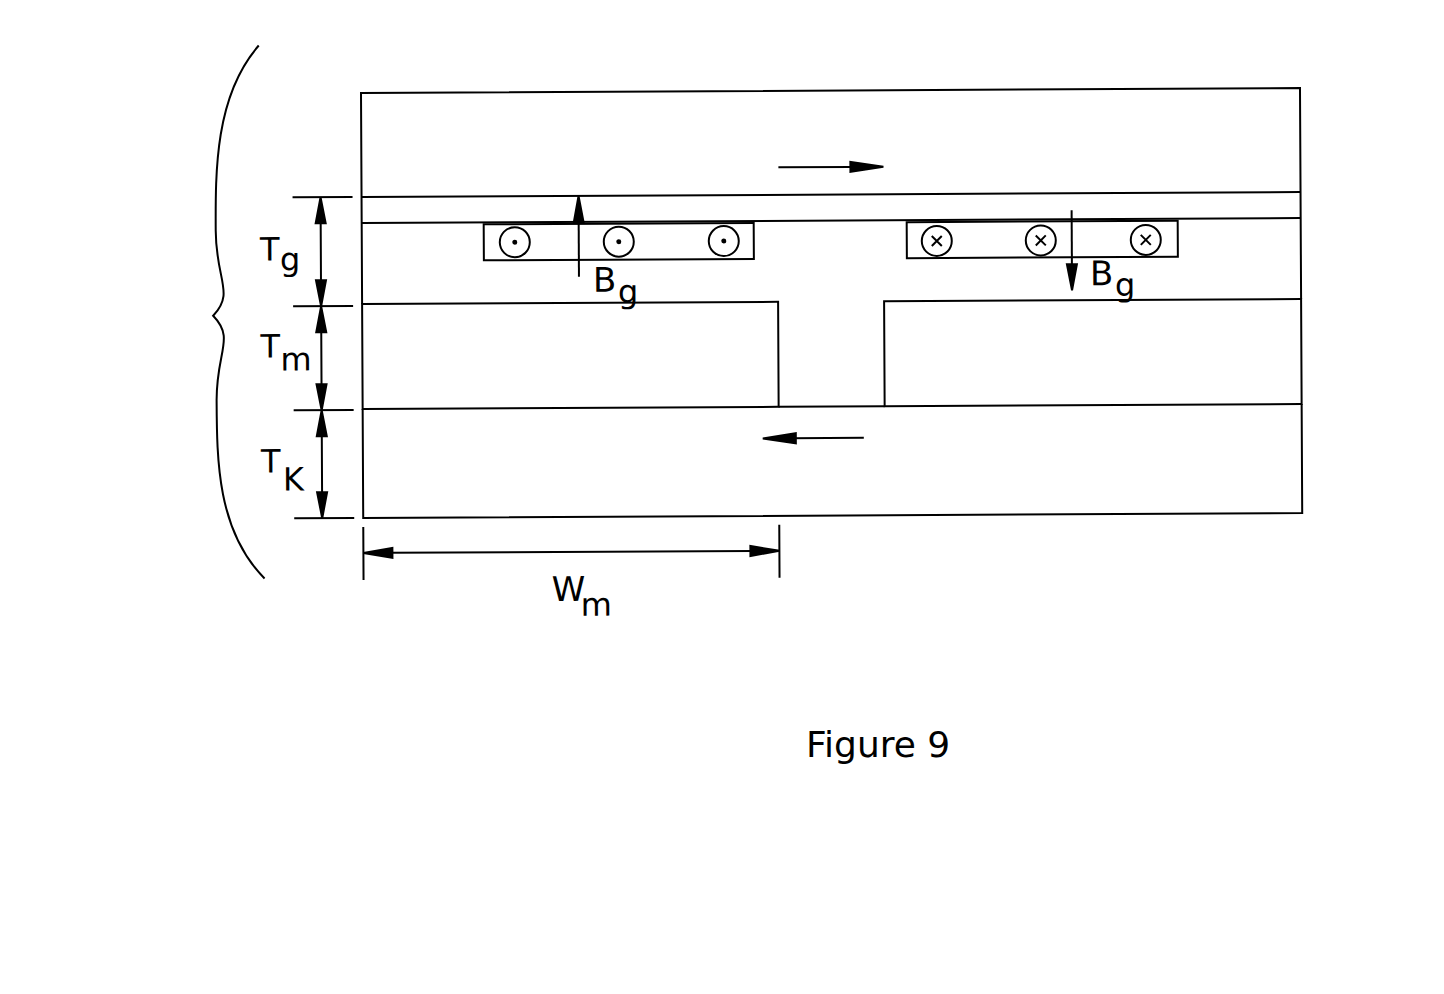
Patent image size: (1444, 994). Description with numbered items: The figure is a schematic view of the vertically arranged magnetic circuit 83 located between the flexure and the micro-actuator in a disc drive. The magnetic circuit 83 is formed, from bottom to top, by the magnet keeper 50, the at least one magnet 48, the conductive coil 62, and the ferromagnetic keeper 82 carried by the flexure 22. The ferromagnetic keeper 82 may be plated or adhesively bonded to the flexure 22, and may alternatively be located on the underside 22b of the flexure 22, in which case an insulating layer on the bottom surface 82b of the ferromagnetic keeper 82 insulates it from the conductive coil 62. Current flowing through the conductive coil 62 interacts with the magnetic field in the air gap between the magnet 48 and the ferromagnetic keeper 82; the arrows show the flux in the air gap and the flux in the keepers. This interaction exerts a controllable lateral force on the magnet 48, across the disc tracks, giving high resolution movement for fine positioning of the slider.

The ferromagnetic keeper 82 is at (1279, 140).
The bottom surface of the ferromagnetic keeper 82b is at (1238, 197).
The flexure 22 is at (1279, 212).
The underside of the flexure 22b is at (1233, 223).
The conductive coil 62 is at (755, 242).
The magnet 48 is at (748, 364).
The magnet keeper 50 is at (1272, 475).
The vertically arranged magnetic circuit 83 is at (208, 313).